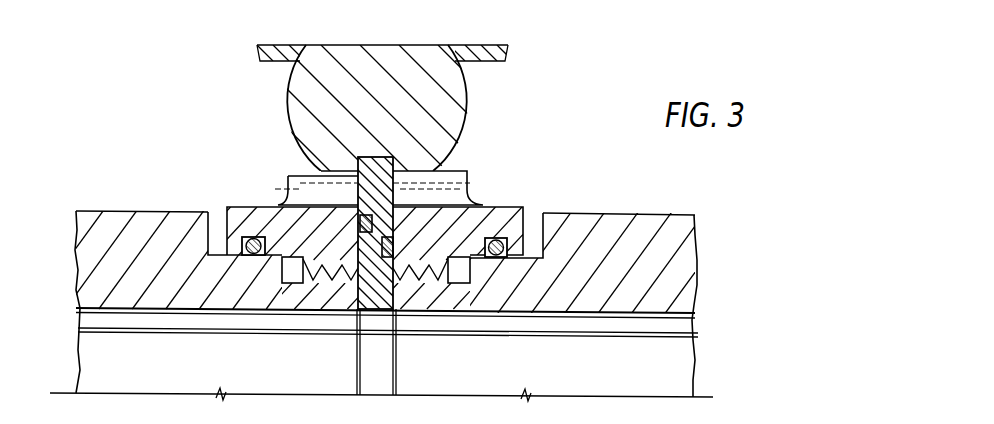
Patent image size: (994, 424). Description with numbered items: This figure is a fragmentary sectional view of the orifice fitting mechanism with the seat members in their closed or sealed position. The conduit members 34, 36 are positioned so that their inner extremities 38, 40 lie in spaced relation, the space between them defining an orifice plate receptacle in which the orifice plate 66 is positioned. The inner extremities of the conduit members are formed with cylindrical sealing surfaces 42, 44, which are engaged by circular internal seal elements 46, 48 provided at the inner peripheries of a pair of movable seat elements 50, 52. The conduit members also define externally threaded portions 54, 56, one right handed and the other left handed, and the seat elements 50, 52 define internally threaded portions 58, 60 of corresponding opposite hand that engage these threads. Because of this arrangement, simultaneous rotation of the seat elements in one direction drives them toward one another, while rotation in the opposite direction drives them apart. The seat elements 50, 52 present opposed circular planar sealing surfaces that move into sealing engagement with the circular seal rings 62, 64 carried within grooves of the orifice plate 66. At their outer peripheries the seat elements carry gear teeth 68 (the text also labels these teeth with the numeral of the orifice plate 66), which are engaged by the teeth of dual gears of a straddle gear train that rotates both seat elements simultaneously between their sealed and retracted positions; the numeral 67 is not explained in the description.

The conduit member 34 is at (105, 213).
The conduit member 36 is at (663, 232).
The extremity 38 is at (365, 376).
The extremity 40 is at (386, 377).
The cylindrical sealing surface 42 is at (208, 227).
The cylindrical sealing surface 44 is at (532, 256).
The circular internal seal element 46 is at (250, 252).
The circular internal seal element 48 is at (502, 258).
The movable seat element 50 is at (233, 207).
The movable seat element 52 is at (505, 241).
The externally threaded portion 54 is at (322, 290).
The externally threaded portion 56 is at (428, 297).
The internally threaded portion 58 is at (337, 253).
The internally threaded portion 60 is at (462, 218).
The circular seal ring 62 is at (357, 217).
The circular seal ring 64 is at (395, 253).
The orifice plate 66 is at (378, 295).
The ball member 67 is at (328, 172).
The gear teeth 68 is at (424, 172).